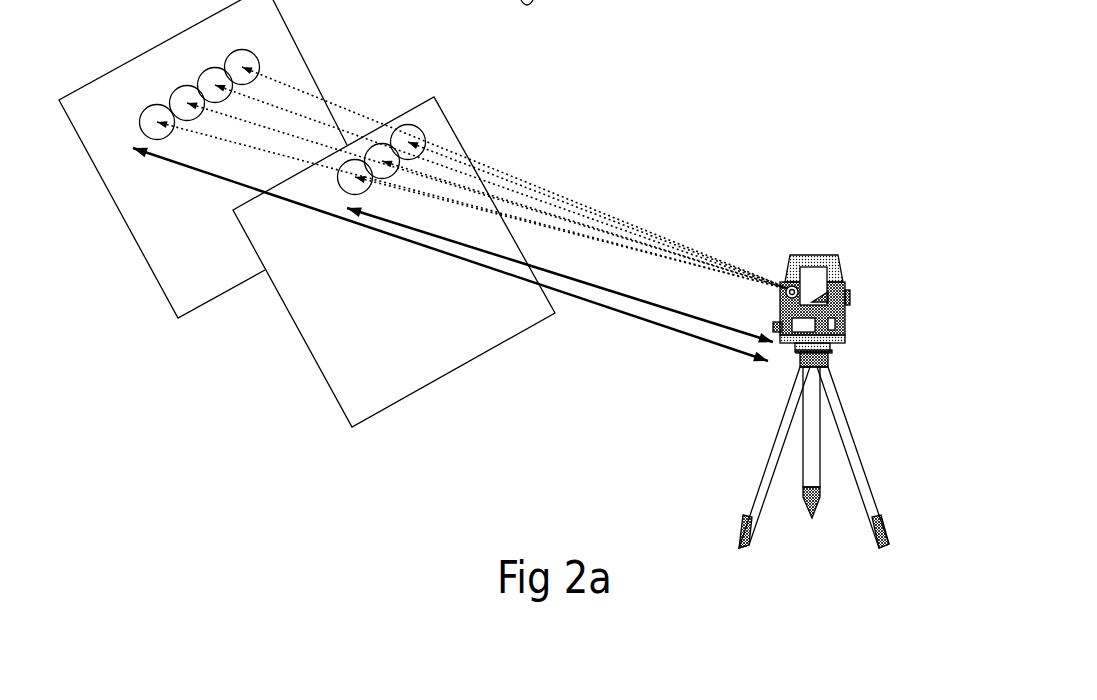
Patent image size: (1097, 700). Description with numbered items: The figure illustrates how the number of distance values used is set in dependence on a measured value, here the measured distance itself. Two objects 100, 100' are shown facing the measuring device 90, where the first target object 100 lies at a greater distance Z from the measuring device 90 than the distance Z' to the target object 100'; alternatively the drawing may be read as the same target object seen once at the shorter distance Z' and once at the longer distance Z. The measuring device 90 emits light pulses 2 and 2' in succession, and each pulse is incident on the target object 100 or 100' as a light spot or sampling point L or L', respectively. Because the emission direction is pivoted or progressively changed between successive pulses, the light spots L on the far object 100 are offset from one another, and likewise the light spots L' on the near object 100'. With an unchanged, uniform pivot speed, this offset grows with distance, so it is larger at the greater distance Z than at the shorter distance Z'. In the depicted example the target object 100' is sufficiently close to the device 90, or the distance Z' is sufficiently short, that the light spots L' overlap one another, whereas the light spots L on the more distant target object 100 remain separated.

The first target object 100 is at (203, 159).
The target object 100' is at (394, 262).
The light spot L is at (255, 73).
The light spot L' is at (436, 146).
The light pulse 2 is at (476, 176).
The light pulse 2' is at (575, 216).
The distance Z is at (450, 266).
The distance Z' is at (560, 296).
The measuring device 90 is at (836, 393).